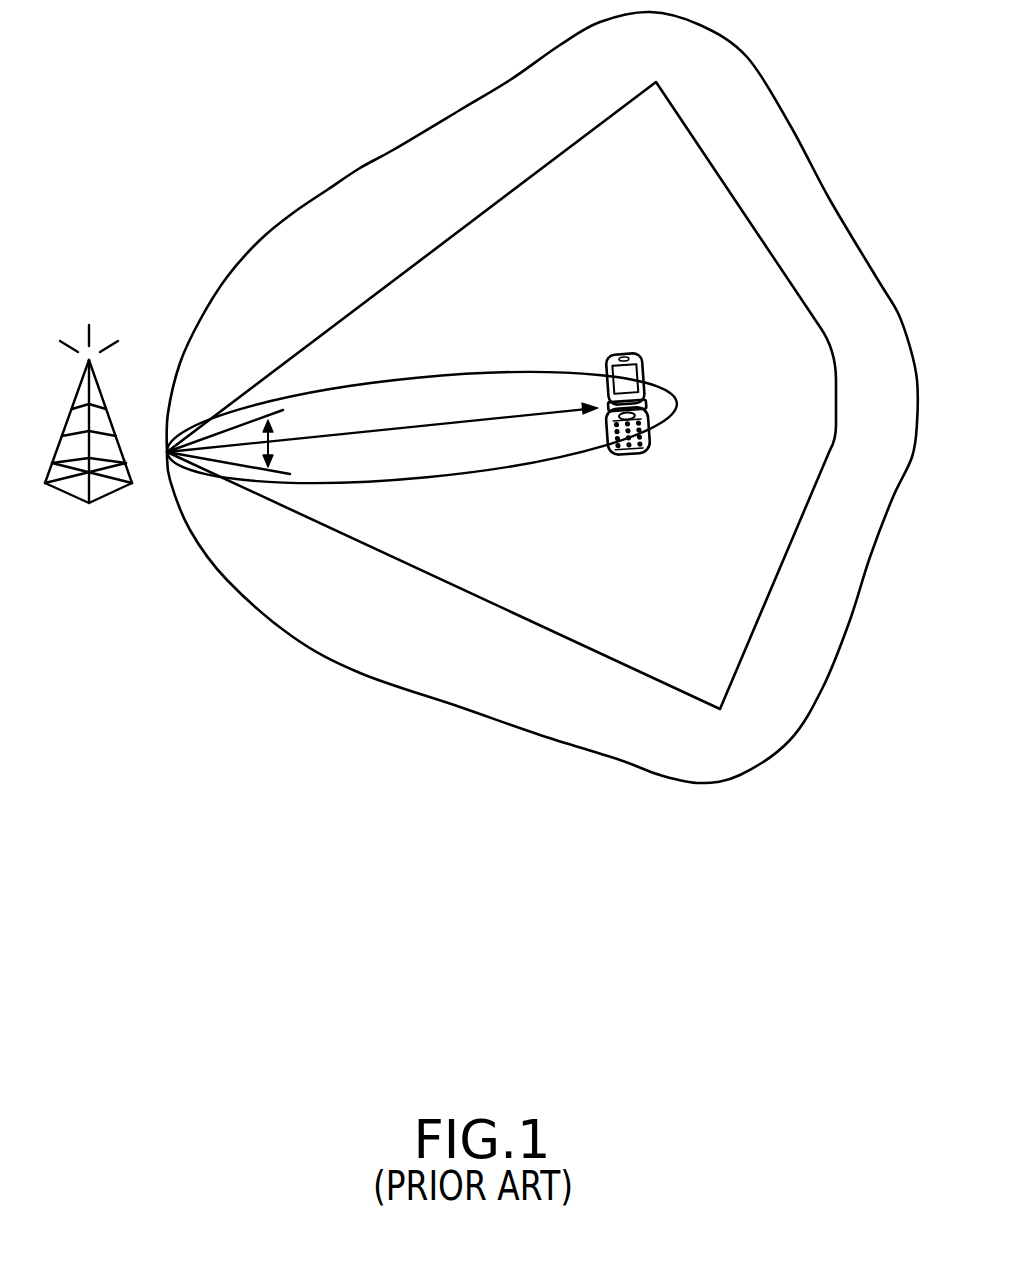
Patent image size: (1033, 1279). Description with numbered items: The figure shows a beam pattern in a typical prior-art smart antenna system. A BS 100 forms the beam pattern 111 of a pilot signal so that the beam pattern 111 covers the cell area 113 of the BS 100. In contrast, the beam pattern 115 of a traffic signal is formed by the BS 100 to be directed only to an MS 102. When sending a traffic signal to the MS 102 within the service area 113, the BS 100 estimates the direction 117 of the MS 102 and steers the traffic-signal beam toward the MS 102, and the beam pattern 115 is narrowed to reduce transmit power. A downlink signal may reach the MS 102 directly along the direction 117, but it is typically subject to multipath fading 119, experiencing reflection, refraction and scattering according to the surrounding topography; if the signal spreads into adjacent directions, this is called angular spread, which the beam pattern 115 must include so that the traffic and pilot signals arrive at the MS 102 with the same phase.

The BS 100 is at (88, 434).
The MS 102 is at (654, 404).
The beam pattern of a pilot signal 111 is at (365, 163).
The cell area 113 is at (432, 246).
The beam pattern of a traffic signal 115 is at (450, 374).
The direction 117 is at (421, 425).
The multipath fading 119 is at (275, 449).